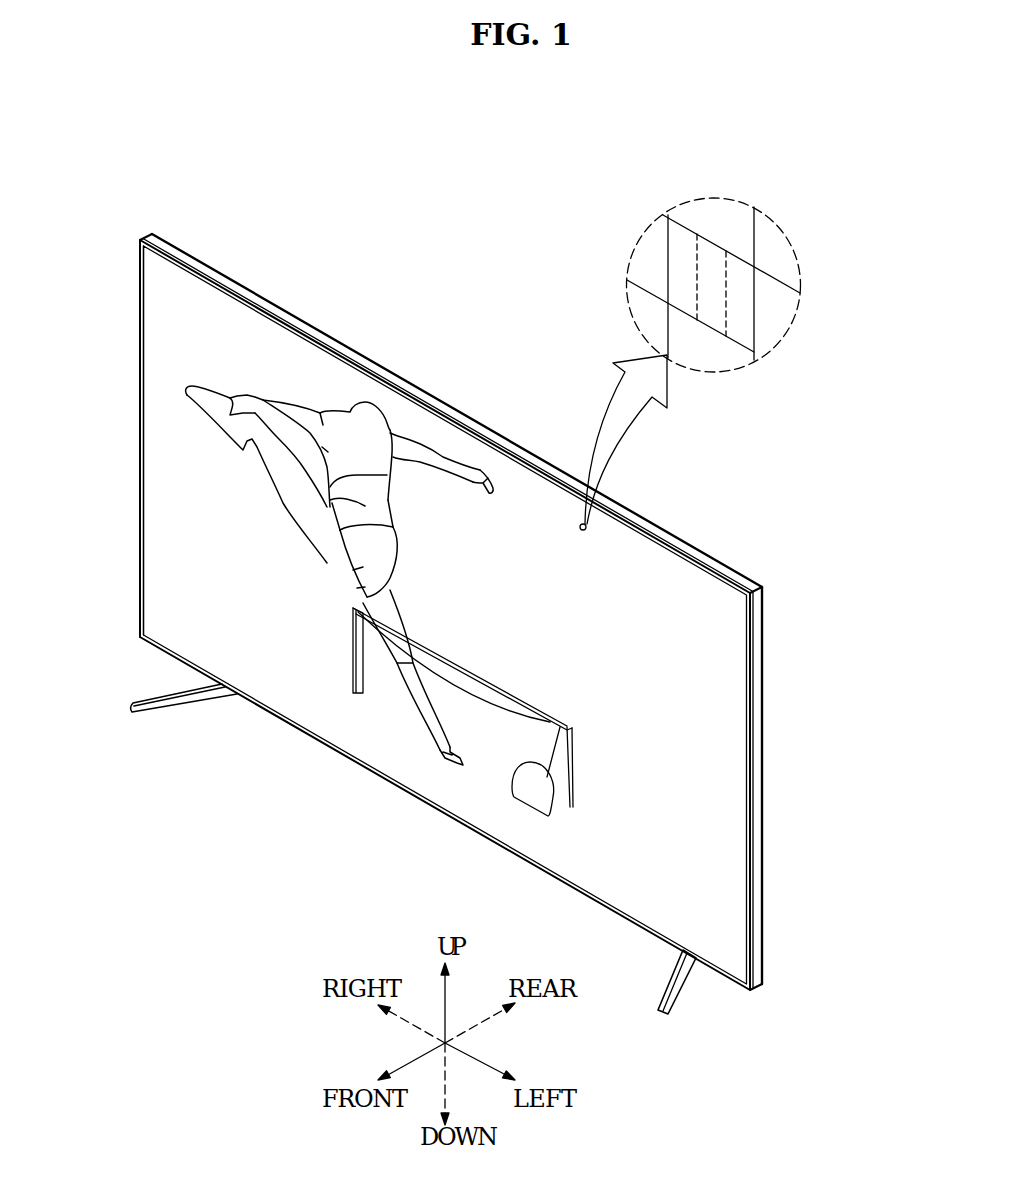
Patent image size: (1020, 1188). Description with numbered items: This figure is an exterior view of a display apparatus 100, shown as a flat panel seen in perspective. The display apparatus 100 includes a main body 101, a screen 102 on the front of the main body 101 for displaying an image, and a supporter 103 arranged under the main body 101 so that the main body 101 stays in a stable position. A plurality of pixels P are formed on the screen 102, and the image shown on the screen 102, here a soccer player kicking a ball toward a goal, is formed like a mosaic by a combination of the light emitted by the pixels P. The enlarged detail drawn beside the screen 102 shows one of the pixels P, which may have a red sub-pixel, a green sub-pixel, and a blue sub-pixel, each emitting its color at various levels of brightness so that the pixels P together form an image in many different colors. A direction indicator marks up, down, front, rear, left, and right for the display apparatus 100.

The display apparatus 100 is at (292, 202).
The main body 101 is at (447, 388).
The screen 102 is at (157, 568).
The supporter 103 is at (158, 703).
The pixel P is at (708, 248).